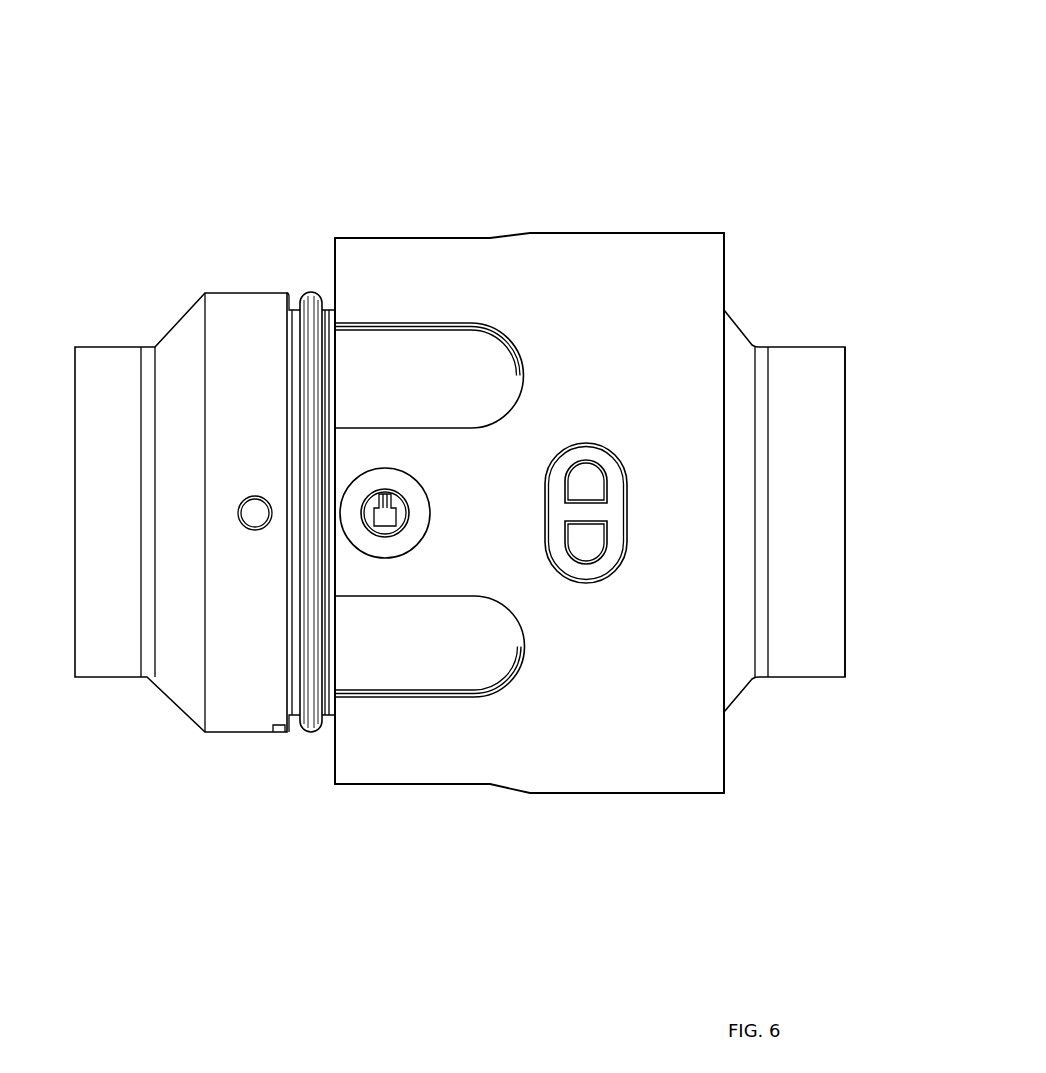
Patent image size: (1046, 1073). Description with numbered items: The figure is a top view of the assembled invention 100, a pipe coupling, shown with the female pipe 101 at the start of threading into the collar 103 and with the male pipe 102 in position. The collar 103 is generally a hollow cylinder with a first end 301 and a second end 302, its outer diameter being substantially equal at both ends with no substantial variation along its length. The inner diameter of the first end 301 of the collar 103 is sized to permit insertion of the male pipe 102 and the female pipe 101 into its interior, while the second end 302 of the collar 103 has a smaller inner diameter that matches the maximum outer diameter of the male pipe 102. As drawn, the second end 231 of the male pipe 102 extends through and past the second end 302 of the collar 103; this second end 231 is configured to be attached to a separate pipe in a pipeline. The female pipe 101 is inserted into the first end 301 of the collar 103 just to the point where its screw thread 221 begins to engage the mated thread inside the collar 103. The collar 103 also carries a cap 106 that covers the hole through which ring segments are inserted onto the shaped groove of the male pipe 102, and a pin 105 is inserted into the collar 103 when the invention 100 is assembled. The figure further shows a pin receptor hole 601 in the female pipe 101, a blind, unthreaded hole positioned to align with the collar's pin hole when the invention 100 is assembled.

The invention 100 is at (471, 108).
The female pipe 101 is at (213, 740).
The male pipe 102 is at (820, 345).
The collar 103 is at (553, 800).
The pin 105 is at (385, 488).
The cap 106 is at (585, 440).
The screw thread 221 is at (311, 285).
The second end of male pipe 231 is at (841, 680).
The first end of collar 301 is at (340, 790).
The second end of collar 302 is at (719, 232).
The pin receptor hole 601 is at (250, 494).